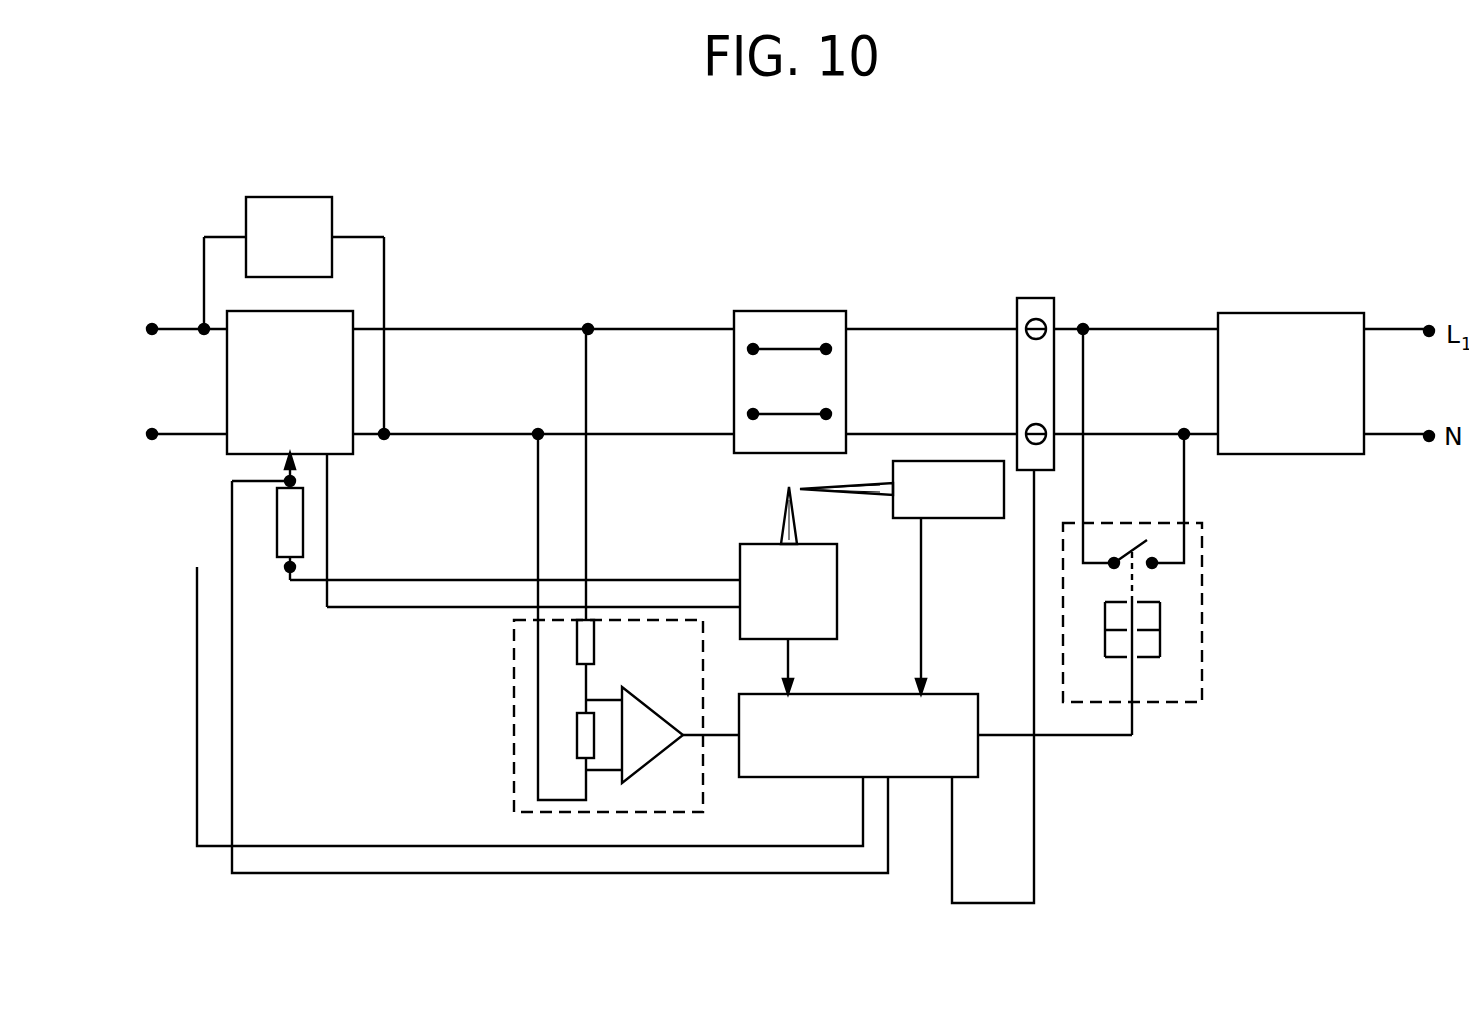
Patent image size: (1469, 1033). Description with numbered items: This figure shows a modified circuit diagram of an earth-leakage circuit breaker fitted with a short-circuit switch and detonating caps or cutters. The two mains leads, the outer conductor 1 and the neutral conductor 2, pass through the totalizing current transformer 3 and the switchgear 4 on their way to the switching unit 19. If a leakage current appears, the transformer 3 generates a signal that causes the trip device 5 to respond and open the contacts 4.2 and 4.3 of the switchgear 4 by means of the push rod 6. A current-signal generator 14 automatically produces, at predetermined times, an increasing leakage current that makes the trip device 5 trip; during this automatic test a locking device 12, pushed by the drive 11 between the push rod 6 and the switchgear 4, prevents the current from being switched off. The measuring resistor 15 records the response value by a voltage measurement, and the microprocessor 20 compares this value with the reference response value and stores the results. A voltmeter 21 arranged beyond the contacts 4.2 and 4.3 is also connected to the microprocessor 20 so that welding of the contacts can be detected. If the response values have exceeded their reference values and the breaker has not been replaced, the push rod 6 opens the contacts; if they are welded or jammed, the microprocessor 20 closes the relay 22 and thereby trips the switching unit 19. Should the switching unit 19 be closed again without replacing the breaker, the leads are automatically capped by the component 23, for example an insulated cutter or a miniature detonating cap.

The outer conductor 1 is at (777, 329).
The neutral conductor 2 is at (777, 434).
The totalizing current transformer 3 is at (227, 380).
The switchgear 4 is at (805, 311).
The contact 4.2 is at (803, 414).
The contact 4.3 is at (768, 352).
The trip device 5 is at (838, 616).
The push rod 6 is at (785, 498).
The drive 11 is at (975, 520).
The locking device 12 is at (850, 497).
The current-signal generator 14 is at (324, 197).
The measuring resistor 15 is at (277, 510).
The switching unit 19 is at (1280, 313).
The microprocessor 20 is at (945, 694).
The voltmeter 21 is at (512, 713).
The relay 22 is at (1205, 622).
The component 23 is at (1043, 298).